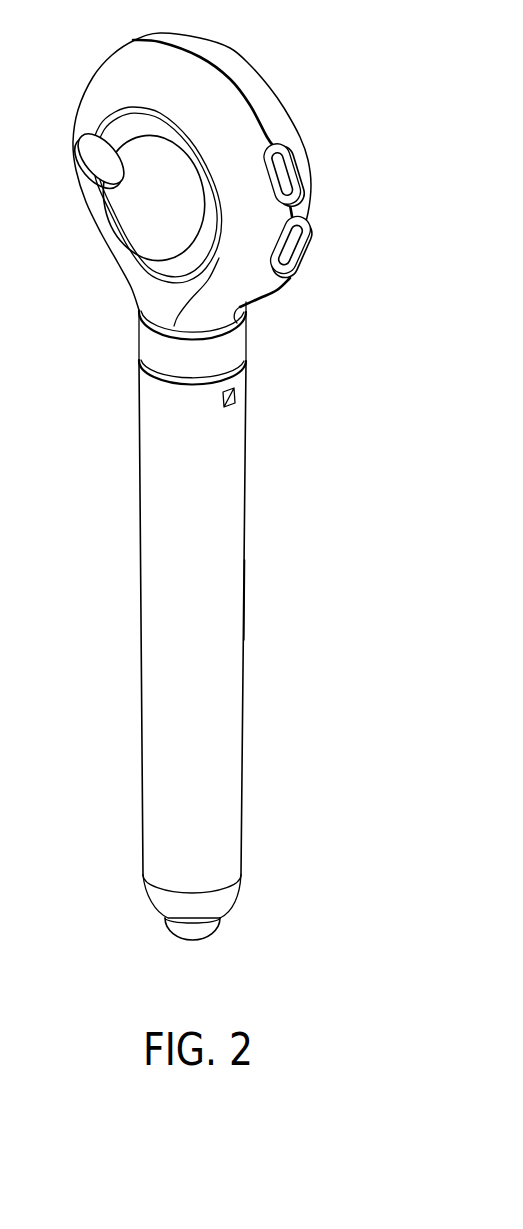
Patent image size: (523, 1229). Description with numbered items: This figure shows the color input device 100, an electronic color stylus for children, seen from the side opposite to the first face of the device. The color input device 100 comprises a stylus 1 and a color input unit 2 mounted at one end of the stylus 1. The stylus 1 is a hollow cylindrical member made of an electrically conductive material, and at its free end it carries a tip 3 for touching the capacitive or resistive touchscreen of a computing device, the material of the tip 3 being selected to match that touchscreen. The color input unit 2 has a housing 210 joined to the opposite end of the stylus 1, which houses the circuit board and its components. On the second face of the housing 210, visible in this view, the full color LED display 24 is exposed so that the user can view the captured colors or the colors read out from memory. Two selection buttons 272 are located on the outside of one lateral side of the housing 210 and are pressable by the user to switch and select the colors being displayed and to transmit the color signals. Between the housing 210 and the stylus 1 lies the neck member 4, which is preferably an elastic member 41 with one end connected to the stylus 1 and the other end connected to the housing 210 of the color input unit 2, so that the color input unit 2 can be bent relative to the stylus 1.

The stylus 1 is at (244, 546).
The color input device 100 is at (245, 602).
The color input unit 2 is at (210, 42).
The housing 210 is at (225, 118).
The full color LED display 24 is at (97, 163).
The selection button 272 is at (290, 172).
The tip 3 is at (180, 925).
The neck member 4 is at (249, 325).
The elastic member 41 is at (233, 345).